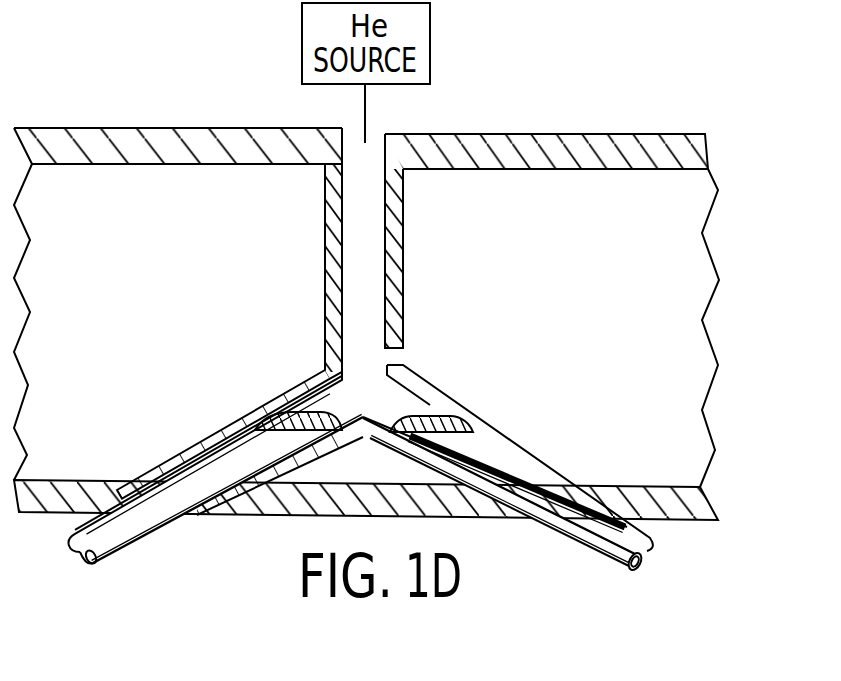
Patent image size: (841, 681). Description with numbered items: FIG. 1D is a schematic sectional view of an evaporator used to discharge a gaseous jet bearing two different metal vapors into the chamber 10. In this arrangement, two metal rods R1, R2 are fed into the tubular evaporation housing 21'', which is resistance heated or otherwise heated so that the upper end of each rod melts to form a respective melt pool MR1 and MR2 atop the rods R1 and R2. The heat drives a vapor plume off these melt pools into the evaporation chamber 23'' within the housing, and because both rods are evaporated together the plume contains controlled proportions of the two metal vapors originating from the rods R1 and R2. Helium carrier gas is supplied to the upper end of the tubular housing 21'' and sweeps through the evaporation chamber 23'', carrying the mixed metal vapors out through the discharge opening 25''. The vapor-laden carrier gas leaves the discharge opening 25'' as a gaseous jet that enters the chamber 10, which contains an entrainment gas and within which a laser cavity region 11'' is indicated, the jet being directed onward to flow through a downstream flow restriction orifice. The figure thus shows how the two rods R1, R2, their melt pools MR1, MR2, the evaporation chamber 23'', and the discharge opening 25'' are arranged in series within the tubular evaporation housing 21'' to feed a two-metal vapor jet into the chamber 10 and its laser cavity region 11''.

The chamber 10 is at (628, 306).
The laser cavity region 11'' is at (550, 280).
The tubular evaporation housing 21'' is at (361, 340).
The evaporation chamber 23'' is at (364, 248).
The discharge opening 25'' is at (431, 297).
The melt pool MR1 is at (297, 420).
The melt pool MR2 is at (427, 424).
The metal rod R1 is at (153, 512).
The metal rod R2 is at (568, 517).